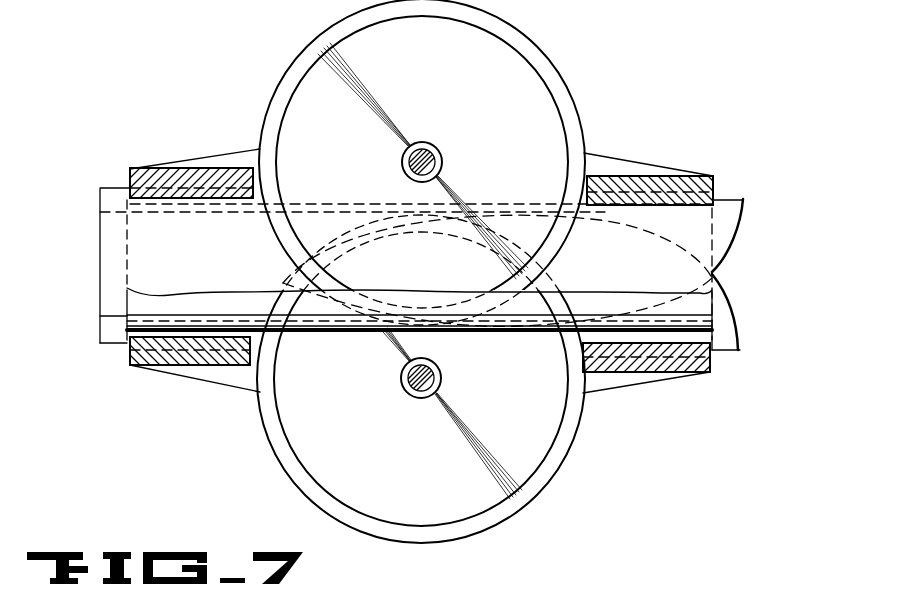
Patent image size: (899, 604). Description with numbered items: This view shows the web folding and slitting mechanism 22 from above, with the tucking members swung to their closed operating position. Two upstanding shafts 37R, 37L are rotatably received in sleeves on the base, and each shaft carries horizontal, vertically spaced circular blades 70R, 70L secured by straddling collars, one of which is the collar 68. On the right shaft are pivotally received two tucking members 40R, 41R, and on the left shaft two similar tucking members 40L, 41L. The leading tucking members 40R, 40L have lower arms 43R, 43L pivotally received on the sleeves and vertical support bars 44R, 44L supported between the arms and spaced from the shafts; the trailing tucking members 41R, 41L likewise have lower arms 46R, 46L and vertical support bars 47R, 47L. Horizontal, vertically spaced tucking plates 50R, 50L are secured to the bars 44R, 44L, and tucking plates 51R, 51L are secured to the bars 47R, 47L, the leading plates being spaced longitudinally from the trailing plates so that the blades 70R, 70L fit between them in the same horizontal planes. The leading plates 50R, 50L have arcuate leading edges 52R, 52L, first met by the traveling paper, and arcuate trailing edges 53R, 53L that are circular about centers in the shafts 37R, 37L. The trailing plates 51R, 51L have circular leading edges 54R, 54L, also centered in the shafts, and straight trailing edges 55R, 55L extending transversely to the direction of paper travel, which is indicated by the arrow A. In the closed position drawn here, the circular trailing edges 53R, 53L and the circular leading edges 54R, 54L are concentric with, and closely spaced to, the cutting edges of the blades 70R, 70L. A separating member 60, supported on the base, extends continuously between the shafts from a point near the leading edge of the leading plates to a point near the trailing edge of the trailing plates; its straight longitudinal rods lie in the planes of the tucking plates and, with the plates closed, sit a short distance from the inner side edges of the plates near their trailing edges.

The web folding and slitting mechanism 22 is at (650, 48).
The circular blades 70R is at (500, 29).
The circular blades 70L is at (296, 464).
The upstanding shaft 37R is at (438, 150).
The upstanding shaft 37L is at (410, 390).
The collar 68 is at (402, 153).
The tucking member 41R is at (204, 156).
The tucking member 41L is at (160, 369).
The lower arm 46R is at (250, 150).
The lower arm 46L is at (220, 377).
The vertical support bar 47R is at (150, 172).
The vertical support bar 47L is at (135, 360).
The tucking plates 51R is at (100, 198).
The tucking plates 51L is at (108, 340).
The trailing edge 55R is at (100, 243).
The trailing edge 55L is at (100, 323).
The separating member 60 is at (135, 304).
The trailing edge 53R is at (565, 222).
The trailing edge 53L is at (533, 322).
The leading edge 54R is at (290, 246).
The leading edge 54L is at (303, 274).
The lower arm 43R is at (612, 160).
The lower arm 43L is at (612, 382).
The tucking member 40R is at (653, 160).
The tucking member 40L is at (669, 376).
The vertical support bar 44R is at (714, 181).
The vertical support bar 44L is at (700, 365).
The tucking plates 50R is at (743, 200).
The tucking plates 50L is at (740, 350).
The leading edge 52R is at (733, 232).
The leading edge 52L is at (708, 298).
The direction of movement A is at (754, 272).